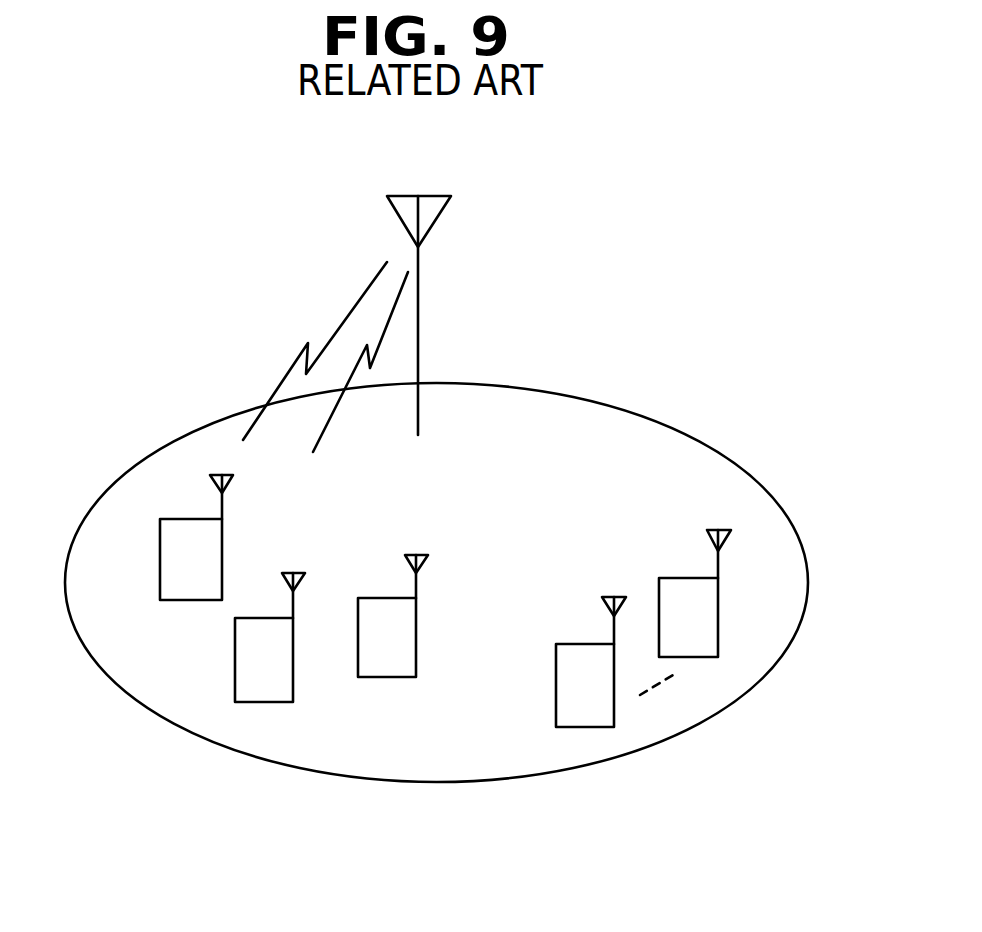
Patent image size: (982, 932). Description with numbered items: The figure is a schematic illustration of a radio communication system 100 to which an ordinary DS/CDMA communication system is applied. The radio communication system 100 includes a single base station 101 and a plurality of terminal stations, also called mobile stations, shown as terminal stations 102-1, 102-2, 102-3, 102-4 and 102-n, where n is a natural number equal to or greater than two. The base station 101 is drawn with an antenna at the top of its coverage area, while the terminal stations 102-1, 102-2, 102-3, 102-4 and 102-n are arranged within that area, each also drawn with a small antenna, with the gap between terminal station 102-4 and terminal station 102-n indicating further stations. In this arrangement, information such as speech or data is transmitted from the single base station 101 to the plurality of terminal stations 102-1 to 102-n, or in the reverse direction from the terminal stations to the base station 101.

The radio communication system 100 is at (359, 822).
The base station 101 is at (450, 196).
The terminal station 102-1 is at (165, 600).
The terminal station 102-2 is at (277, 702).
The terminal station 102-3 is at (400, 677).
The terminal station 102-4 is at (600, 727).
The terminal station 102-n is at (718, 644).